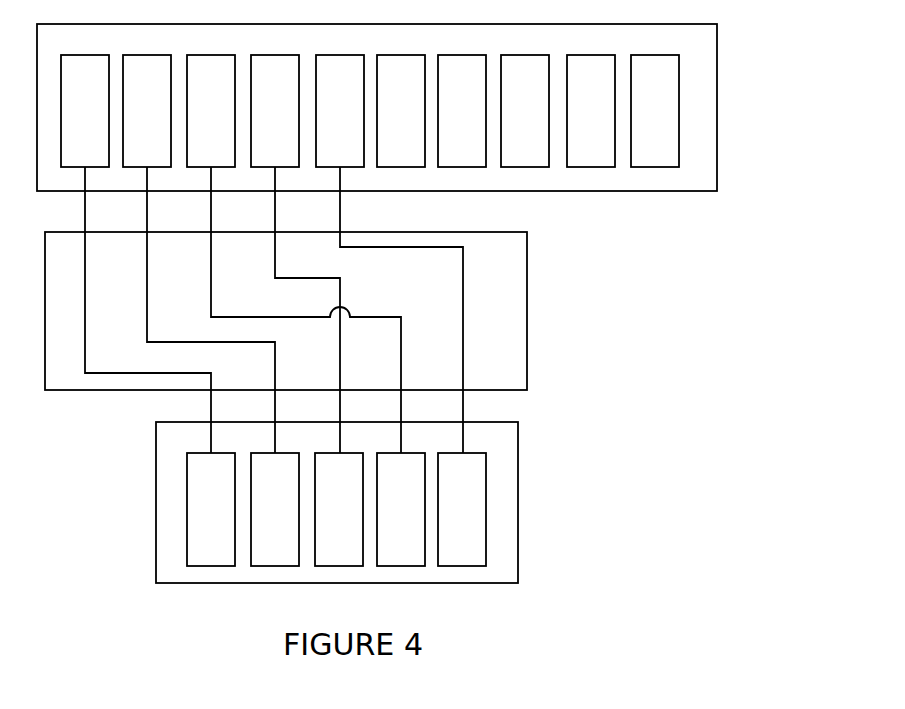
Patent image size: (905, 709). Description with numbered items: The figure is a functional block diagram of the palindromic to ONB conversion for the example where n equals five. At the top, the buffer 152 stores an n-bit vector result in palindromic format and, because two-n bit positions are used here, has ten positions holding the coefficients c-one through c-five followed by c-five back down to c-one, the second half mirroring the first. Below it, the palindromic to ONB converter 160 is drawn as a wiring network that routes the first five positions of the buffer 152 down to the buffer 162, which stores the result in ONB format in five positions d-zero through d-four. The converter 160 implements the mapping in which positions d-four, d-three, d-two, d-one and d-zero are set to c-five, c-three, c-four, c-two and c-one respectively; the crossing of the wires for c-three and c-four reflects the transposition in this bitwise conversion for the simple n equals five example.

The buffer 152 is at (717, 108).
The palindromic to ONB converter 160 is at (527, 308).
The buffer 162 is at (518, 502).